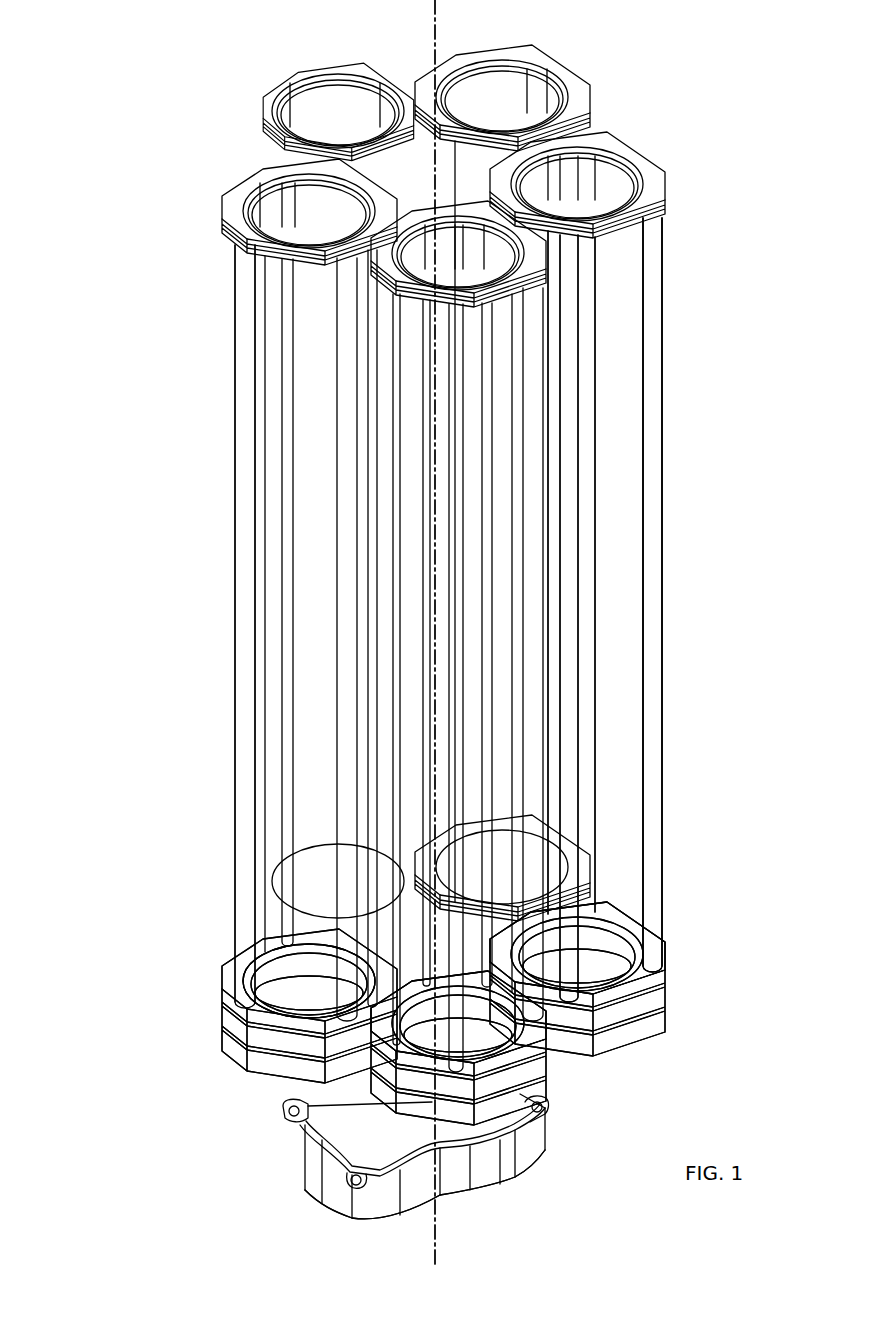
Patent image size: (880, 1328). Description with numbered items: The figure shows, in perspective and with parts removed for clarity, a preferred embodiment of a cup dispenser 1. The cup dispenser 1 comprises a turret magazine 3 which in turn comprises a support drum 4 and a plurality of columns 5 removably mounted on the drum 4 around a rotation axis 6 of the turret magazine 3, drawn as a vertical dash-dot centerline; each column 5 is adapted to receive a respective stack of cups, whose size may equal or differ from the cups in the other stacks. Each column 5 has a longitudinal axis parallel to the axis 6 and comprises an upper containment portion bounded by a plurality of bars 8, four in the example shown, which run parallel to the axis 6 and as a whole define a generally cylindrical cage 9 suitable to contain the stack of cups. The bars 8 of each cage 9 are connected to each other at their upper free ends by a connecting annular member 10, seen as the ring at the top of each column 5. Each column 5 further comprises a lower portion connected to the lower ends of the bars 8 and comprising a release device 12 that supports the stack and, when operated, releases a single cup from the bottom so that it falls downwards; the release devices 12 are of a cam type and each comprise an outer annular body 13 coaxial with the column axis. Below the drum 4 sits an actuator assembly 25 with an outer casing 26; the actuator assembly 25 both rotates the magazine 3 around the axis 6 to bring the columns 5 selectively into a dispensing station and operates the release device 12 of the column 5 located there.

The cup dispenser 1 is at (165, 562).
The turret magazine 3 is at (685, 625).
The support drum 4 is at (405, 955).
The column 5 is at (225, 1060).
The rotation axis 6 is at (433, 25).
The bar 8 is at (268, 372).
The cage 9 is at (240, 735).
The connecting annular member 10 is at (270, 85).
The release device 12 is at (290, 1052).
The outer annular body 13 is at (655, 1000).
The actuator assembly 25 is at (305, 1195).
The outer casing 26 is at (455, 1185).